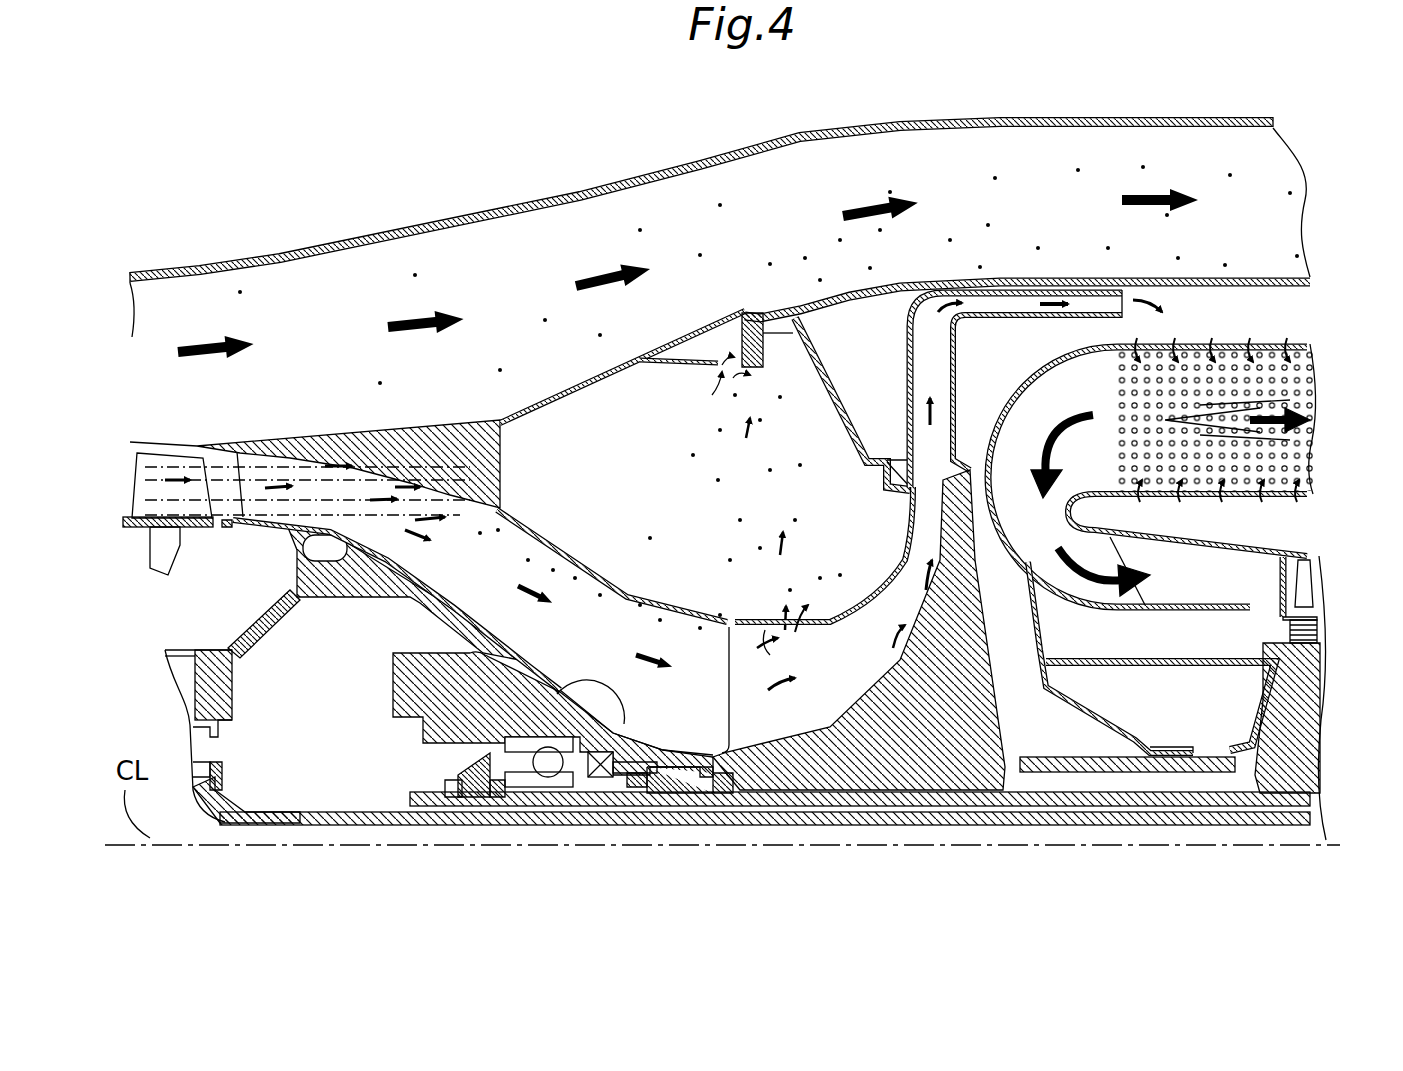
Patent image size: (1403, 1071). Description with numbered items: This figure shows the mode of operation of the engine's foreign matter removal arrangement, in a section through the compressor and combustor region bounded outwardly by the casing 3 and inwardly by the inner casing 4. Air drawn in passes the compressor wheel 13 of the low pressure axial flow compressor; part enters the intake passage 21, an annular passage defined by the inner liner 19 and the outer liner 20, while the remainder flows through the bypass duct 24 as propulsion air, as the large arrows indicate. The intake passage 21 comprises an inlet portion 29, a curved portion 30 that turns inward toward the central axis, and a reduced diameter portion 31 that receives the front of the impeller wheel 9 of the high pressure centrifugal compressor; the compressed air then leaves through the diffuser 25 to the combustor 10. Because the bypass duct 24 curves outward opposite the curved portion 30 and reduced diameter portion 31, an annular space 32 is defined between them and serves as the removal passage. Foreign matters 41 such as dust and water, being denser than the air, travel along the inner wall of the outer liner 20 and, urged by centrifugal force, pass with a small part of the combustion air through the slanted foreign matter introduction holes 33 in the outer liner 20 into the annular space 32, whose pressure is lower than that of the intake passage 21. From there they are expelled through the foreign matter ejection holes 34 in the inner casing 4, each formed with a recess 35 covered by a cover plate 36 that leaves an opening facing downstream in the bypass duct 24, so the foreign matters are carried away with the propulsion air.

The outer casing 3 is at (1063, 119).
The inner casing 4 is at (1260, 287).
The impeller wheel 9 is at (835, 680).
The combustor 10 is at (1268, 345).
The compressor wheel 13 is at (140, 495).
The inner liner 19 is at (430, 607).
The outer liner 20 is at (647, 597).
The intake passage 21 is at (603, 750).
The bypass duct 24 is at (566, 328).
The diffuser 25 is at (990, 322).
The inlet portion 29 is at (218, 490).
The curved portion 30 is at (538, 645).
The reduced diameter portion 31 is at (731, 705).
The annular space 32 is at (628, 500).
The foreign matter introduction holes 33 is at (797, 640).
The foreign matter ejection holes 34 is at (734, 380).
The recess 35 is at (710, 340).
The cover plate 36 is at (678, 337).
The foreign matters 41 is at (790, 240).